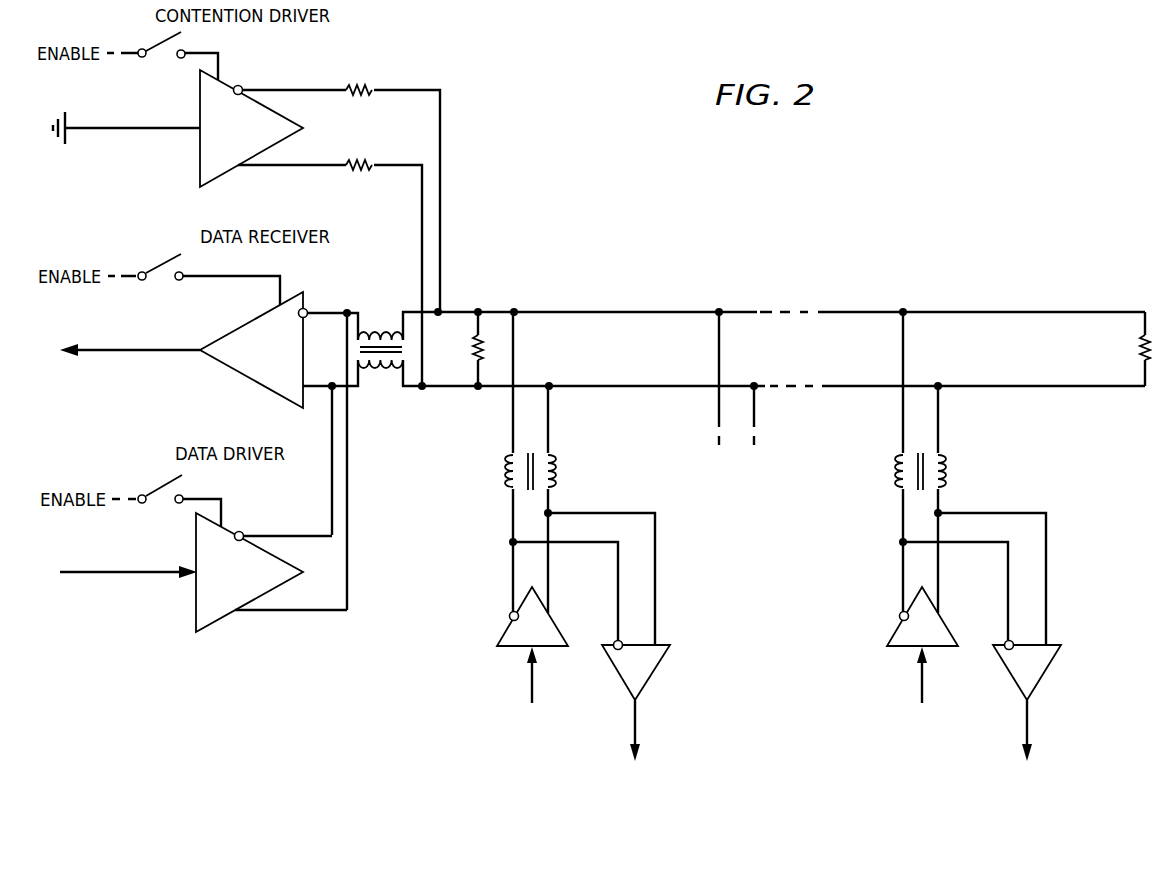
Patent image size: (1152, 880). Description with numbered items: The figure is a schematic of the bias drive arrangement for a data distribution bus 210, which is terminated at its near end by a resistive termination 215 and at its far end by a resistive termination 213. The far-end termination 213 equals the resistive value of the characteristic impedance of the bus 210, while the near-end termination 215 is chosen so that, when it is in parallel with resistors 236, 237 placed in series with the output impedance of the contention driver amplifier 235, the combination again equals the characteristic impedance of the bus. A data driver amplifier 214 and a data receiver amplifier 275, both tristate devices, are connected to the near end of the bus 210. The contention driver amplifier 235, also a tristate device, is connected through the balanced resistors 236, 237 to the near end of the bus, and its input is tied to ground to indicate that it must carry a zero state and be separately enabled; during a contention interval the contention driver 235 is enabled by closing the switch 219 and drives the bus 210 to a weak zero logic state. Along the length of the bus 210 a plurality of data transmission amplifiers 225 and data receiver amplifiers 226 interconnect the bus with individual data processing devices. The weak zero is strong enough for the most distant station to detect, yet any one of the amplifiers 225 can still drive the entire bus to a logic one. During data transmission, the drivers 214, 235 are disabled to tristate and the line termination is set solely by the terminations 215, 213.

The data distribution bus 210 is at (843, 359).
The resistive termination 213 is at (1130, 349).
The data driver amplifier 214 is at (208, 540).
The resistive termination 215 is at (463, 349).
The switch 219 is at (178, 56).
The data transmission amplifier 225 is at (520, 628).
The data receiver amplifier 226 is at (645, 672).
The contention driver amplifier 235 is at (200, 167).
The resistor 236 is at (341, 186).
The resistor 237 is at (330, 261).
The data receiver amplifier 275 is at (253, 368).